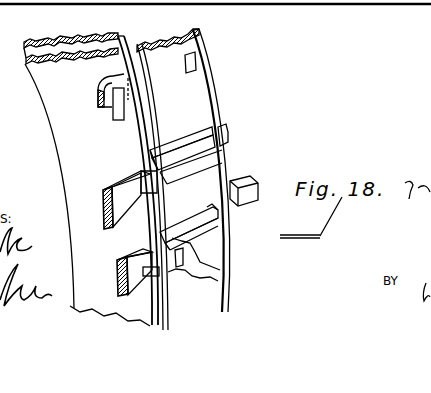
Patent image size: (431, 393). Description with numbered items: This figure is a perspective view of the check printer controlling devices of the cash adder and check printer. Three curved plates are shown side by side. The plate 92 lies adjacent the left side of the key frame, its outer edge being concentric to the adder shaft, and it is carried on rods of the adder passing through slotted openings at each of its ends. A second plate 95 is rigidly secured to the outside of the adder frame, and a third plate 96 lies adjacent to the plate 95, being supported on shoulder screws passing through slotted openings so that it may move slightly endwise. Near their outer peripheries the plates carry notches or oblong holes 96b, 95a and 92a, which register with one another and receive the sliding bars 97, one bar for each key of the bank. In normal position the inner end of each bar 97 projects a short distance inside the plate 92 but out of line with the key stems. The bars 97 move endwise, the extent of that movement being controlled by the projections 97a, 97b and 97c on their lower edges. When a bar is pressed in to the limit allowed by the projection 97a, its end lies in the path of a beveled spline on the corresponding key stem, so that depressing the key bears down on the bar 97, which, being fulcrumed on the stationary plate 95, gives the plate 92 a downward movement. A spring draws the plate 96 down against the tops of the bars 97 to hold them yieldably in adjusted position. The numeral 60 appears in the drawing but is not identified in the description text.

The frame 60 is at (118, 0).
The plate 92 is at (200, 98).
The notches or oblong holes 92a is at (190, 62).
The second plate 95 is at (35, 45).
The notches or oblong holes 95a is at (115, 114).
The third plate 96 is at (57, 116).
The notches or oblong holes 96b is at (162, 175).
The sliding bars 97 is at (208, 143).
The projection 97a is at (102, 326).
The projection 97b is at (142, 191).
The projection 97c is at (192, 260).